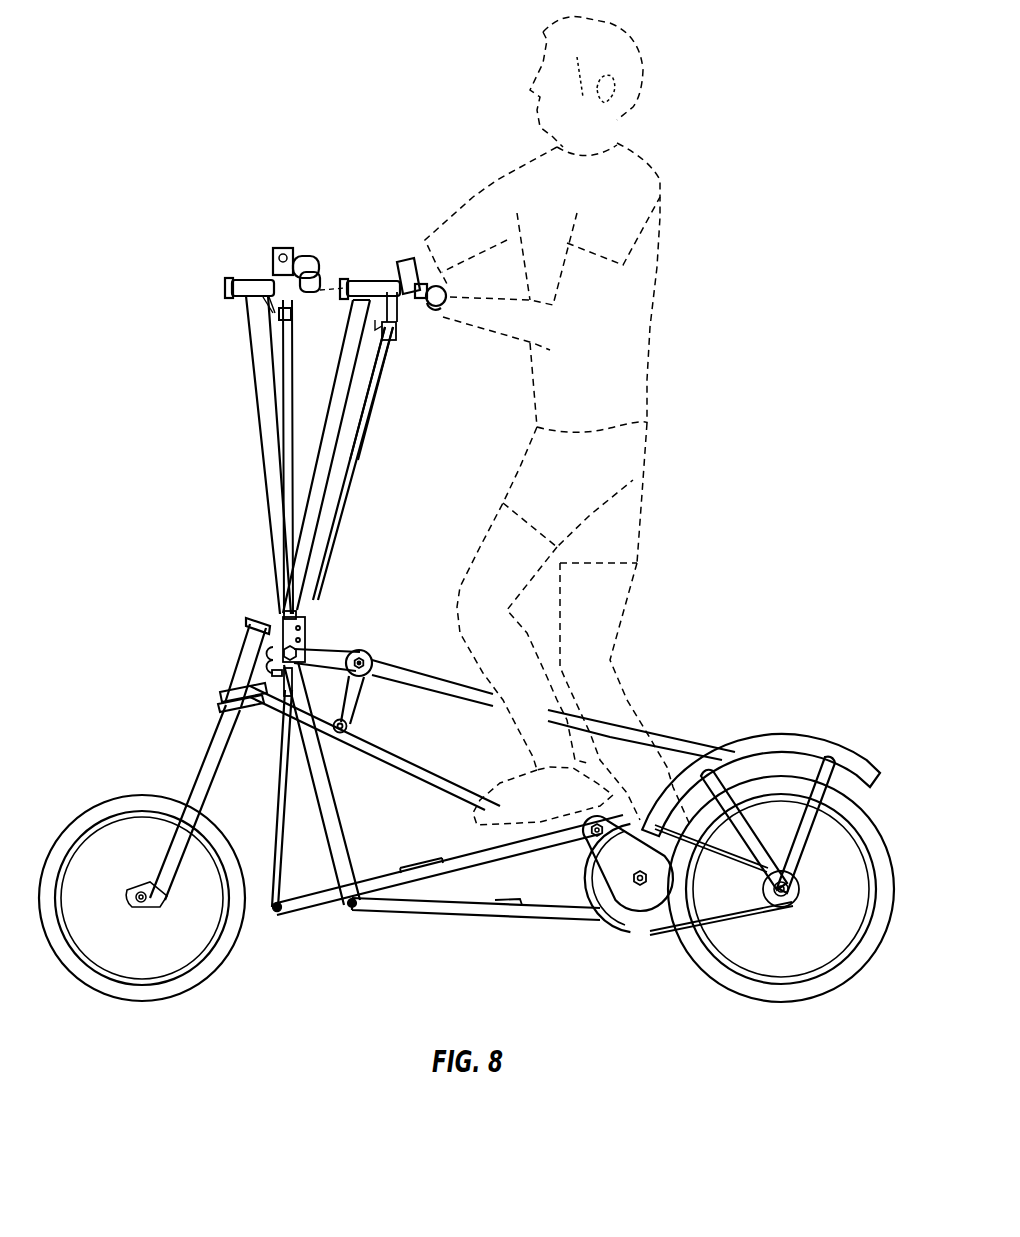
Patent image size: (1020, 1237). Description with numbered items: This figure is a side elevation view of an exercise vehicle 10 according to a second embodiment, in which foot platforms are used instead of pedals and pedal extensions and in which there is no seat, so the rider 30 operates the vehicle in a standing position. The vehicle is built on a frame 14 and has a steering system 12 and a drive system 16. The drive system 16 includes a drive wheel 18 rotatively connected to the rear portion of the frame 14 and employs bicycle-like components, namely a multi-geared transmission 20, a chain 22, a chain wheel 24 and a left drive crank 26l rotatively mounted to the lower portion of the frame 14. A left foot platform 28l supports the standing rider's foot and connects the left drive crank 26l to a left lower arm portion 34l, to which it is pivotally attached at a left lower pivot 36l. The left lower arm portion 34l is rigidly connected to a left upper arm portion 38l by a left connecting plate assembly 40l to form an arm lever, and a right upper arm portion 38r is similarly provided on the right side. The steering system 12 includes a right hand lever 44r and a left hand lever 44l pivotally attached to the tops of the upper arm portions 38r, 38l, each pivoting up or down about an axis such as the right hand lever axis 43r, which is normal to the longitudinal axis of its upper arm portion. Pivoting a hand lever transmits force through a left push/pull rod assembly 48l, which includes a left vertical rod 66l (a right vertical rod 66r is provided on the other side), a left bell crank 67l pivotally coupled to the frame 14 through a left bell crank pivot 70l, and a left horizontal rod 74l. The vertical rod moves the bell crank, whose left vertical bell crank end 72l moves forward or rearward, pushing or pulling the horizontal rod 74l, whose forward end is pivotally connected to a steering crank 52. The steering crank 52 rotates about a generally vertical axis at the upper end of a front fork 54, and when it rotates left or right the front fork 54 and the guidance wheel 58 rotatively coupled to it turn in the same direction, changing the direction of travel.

The exercise vehicle 10 is at (748, 134).
The steering system 12 is at (247, 617).
The frame 14 is at (675, 733).
The drive system 16 is at (543, 928).
The drive wheel 18 is at (843, 787).
The multi-geared transmission 20 is at (800, 887).
The chain 22 is at (760, 917).
The chain wheel 24 is at (630, 917).
The left drive crank 26l is at (567, 882).
The left foot platform 28l is at (423, 862).
The rider 30 is at (660, 268).
The left lower arm portion 34l is at (273, 787).
The left lower pivot 36l is at (277, 920).
The right upper arm portion 38r is at (247, 323).
The left upper arm portion 38l is at (333, 400).
The left connecting plate assembly 40l is at (270, 615).
The right hand lever axis 43r is at (227, 288).
The right hand lever 44r is at (308, 257).
The left hand lever 44l is at (430, 307).
The left push/pull rod assembly 48l is at (327, 647).
The steering crank 52 is at (213, 708).
The front fork 54 is at (200, 763).
The guidance wheel 58 is at (85, 813).
The right vertical rod 66r is at (300, 350).
The left vertical rod 66l is at (372, 410).
The left bell crank 67l is at (443, 656).
The left bell crank pivot 70l is at (397, 634).
The left vertical bell crank end 72l is at (347, 722).
The left horizontal rod 74l is at (270, 707).